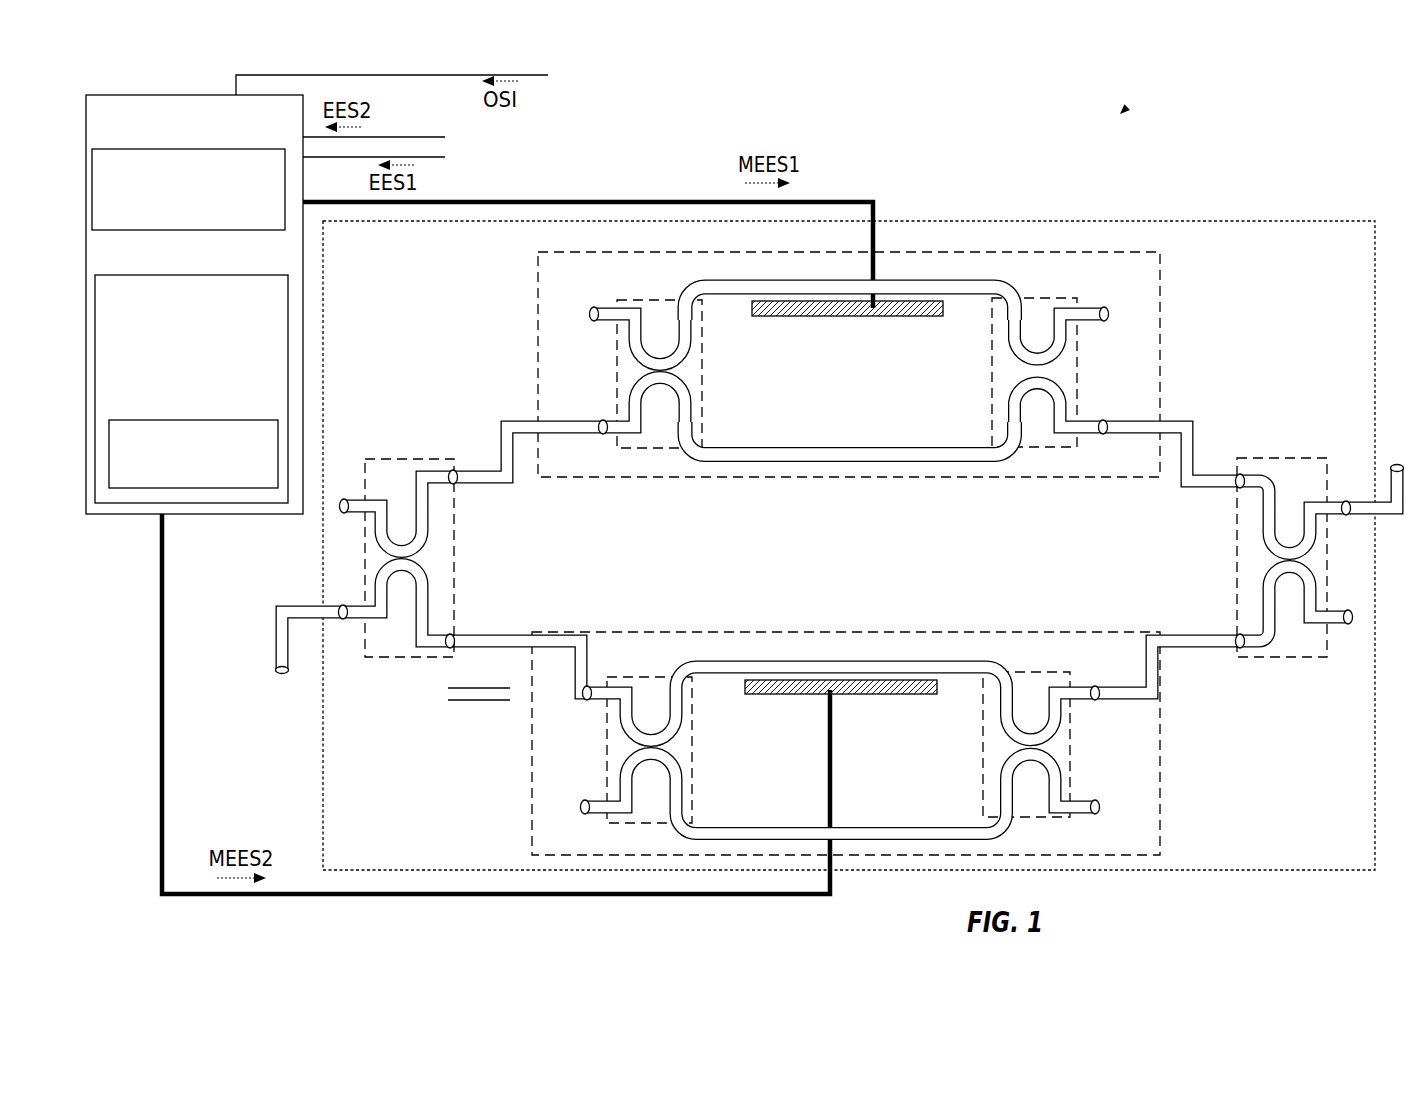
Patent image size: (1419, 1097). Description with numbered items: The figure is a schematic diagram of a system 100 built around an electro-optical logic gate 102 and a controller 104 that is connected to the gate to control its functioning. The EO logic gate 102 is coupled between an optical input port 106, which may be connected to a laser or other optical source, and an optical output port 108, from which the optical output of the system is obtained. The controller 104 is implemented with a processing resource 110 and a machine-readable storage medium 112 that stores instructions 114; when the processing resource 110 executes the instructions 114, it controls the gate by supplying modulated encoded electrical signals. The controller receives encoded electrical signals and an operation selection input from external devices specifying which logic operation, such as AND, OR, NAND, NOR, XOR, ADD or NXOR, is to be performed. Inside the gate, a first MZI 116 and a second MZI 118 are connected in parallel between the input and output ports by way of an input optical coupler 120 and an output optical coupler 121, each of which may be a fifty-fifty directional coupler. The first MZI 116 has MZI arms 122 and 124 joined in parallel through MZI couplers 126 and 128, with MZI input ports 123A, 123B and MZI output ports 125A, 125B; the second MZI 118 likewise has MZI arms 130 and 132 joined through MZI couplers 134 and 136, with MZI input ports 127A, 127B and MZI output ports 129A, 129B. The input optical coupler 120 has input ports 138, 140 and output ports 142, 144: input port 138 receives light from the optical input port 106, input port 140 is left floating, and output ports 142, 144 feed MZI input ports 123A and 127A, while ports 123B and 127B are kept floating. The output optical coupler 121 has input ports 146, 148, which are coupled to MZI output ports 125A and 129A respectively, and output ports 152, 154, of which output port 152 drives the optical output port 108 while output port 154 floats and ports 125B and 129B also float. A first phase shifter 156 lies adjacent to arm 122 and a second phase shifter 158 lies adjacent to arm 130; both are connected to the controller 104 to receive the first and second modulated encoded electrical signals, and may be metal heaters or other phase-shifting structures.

The system 100 is at (1124, 108).
The EO logic gate 102 is at (1273, 221).
The controller 104 is at (117, 95).
The optical input port 106 is at (1397, 464).
The optical output port 108 is at (280, 676).
The processing resource 110 is at (223, 230).
The machine-readable storage medium 112 is at (133, 274).
The instructions 114 is at (208, 420).
The first MZI 116 is at (905, 252).
The second MZI 118 is at (895, 632).
The input optical coupler 120 is at (1255, 458).
The output optical coupler 121 is at (382, 459).
The MZI arm 122 is at (781, 280).
The MZI input port 123A is at (1105, 423).
The MZI input port 123B is at (1106, 318).
The MZI arm 124 is at (905, 448).
The MZI output port 125A is at (601, 423).
The MZI output port 125B is at (594, 318).
The MZI coupler 126 is at (1041, 298).
The MZI input port 127A is at (1097, 700).
The MZI input port 127B is at (1098, 801).
The MZI coupler 128 is at (632, 300).
The MZI output port 129A is at (585, 702).
The MZI output port 129B is at (583, 802).
The MZI arm 130 is at (772, 661).
The MZI arm 132 is at (897, 827).
The MZI coupler 134 is at (1032, 672).
The MZI coupler 136 is at (625, 677).
The input port 138 is at (1350, 516).
The input port 140 is at (1353, 614).
The output port 142 is at (1238, 490).
The output port 144 is at (1237, 634).
The input port 146 is at (454, 486).
The input port 148 is at (453, 637).
The output port 152 is at (338, 610).
The output port 154 is at (339, 509).
The first phase shifter 156 is at (789, 316).
The second phase shifter 158 is at (866, 696).